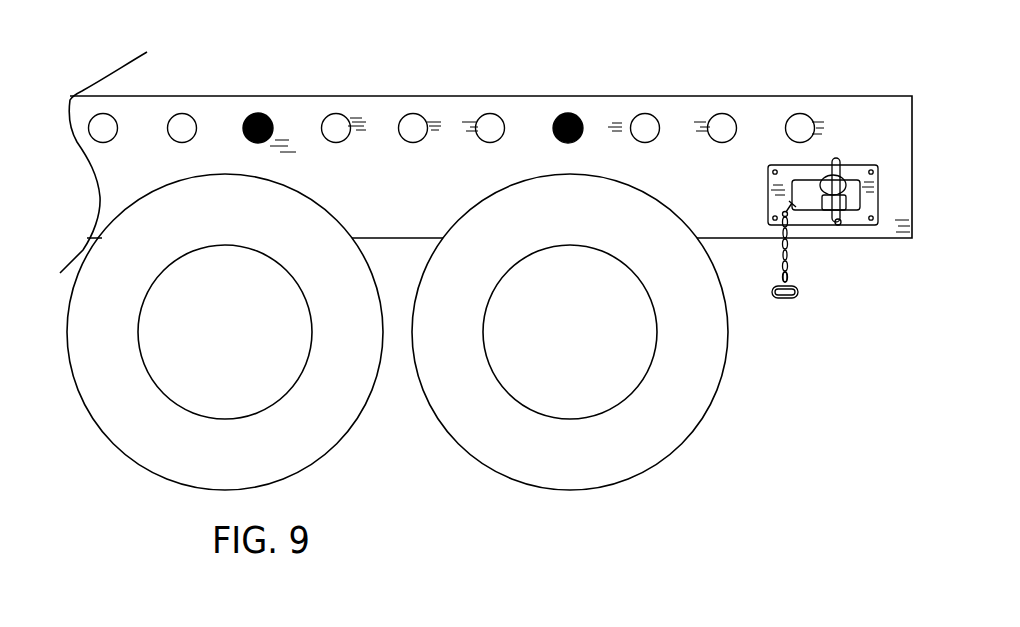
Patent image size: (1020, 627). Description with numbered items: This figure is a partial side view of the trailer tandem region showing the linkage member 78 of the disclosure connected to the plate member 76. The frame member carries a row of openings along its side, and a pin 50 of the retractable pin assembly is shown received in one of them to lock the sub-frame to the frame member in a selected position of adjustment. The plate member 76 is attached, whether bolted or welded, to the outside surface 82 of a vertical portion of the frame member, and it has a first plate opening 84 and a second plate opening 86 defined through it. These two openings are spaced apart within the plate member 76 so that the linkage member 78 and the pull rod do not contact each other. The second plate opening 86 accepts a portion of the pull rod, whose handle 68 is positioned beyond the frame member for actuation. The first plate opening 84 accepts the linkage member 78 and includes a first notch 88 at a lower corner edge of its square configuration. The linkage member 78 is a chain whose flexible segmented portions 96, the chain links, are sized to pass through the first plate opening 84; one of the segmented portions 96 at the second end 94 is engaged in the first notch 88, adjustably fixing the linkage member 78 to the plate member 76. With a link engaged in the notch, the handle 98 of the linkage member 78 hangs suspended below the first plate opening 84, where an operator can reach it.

The pin 50 is at (571, 113).
The outside surface 82 is at (858, 108).
The first plate opening 84 is at (787, 178).
The second plate opening 86 is at (848, 177).
The first notch 88 is at (790, 205).
The handle 68 is at (838, 226).
The plate member 76 is at (858, 222).
The linkage member 78 is at (799, 291).
The segmented portions 96 is at (782, 278).
The second end 94 is at (771, 280).
The handle 98 is at (786, 300).